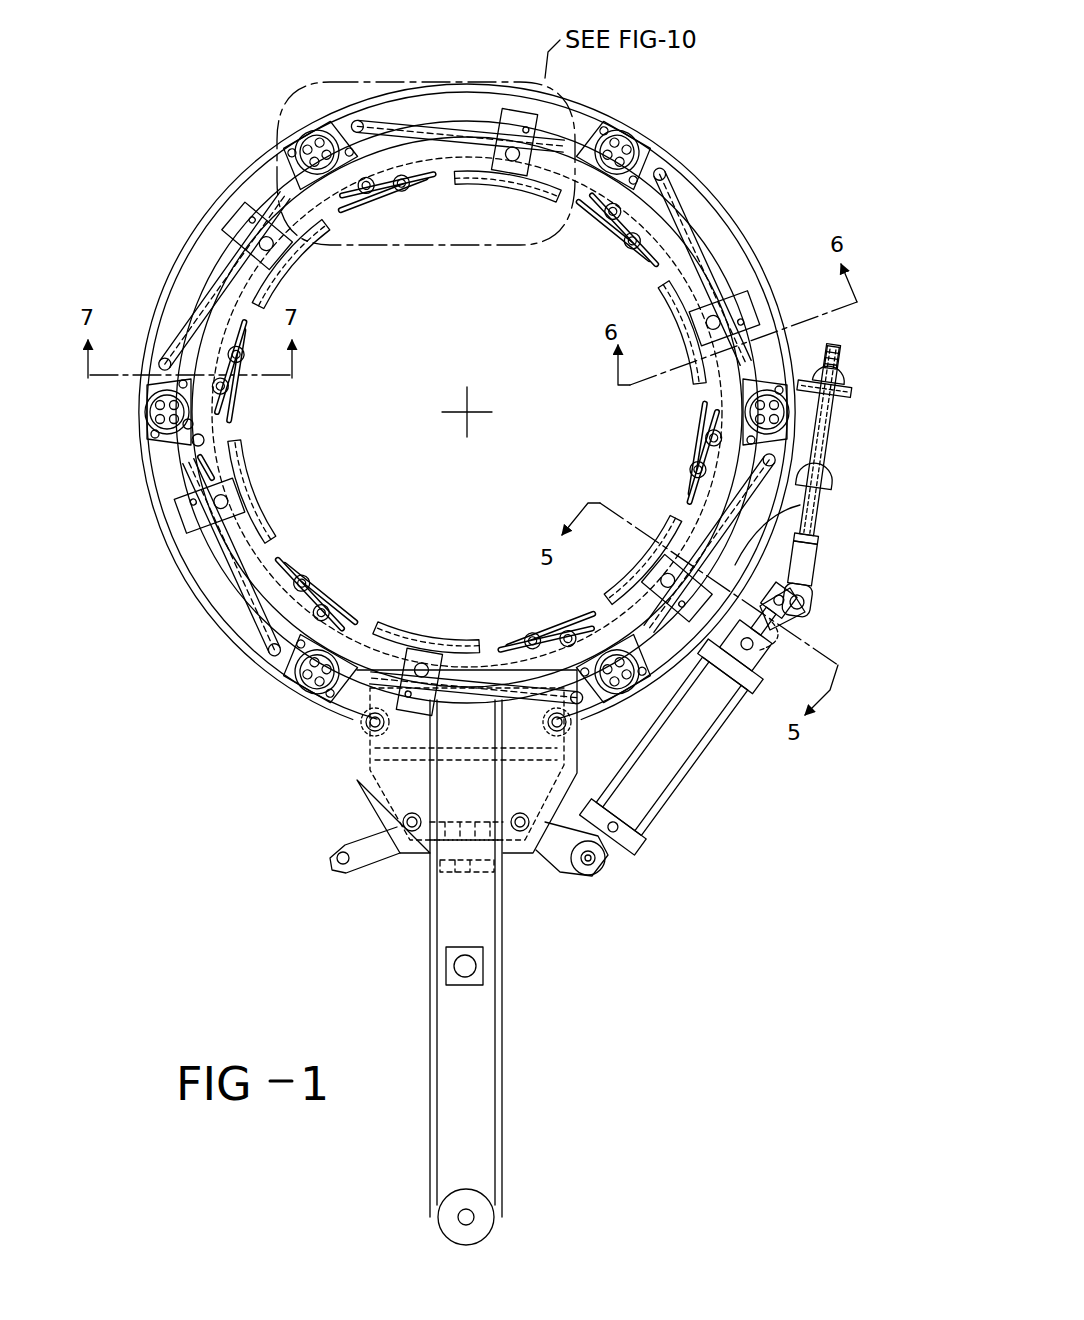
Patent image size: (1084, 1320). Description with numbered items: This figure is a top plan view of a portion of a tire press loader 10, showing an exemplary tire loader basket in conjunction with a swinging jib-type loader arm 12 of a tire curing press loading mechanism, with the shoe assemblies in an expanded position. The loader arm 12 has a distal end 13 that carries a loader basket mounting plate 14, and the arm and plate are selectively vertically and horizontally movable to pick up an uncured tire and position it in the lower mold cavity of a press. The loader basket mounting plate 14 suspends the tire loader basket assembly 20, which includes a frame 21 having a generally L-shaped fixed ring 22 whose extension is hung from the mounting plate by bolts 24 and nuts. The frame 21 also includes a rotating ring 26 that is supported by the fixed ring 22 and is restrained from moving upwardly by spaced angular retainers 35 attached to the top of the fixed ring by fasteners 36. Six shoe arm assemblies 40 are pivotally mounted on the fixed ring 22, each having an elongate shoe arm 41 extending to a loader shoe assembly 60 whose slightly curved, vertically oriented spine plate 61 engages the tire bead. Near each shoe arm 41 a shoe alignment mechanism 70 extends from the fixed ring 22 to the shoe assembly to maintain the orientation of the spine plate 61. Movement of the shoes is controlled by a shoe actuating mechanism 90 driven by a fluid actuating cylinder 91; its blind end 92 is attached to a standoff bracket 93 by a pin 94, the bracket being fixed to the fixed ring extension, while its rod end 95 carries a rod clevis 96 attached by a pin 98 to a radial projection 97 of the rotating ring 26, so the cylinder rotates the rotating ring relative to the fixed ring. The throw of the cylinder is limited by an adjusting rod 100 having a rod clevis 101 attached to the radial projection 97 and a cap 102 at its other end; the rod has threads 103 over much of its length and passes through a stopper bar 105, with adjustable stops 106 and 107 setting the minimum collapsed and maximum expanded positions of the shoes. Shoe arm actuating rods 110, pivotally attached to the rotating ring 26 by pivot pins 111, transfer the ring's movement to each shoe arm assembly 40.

The tire press loader 10 is at (160, 100).
The loader arm 12 is at (510, 1076).
The distal end 13 is at (428, 770).
The loader basket mounting plate 14 is at (362, 750).
The tire loader basket assembly 20 is at (752, 210).
The frame 21 is at (722, 190).
The fixed ring 22 is at (742, 293).
The bolts 24 is at (364, 722).
The rotating ring 26 is at (550, 168).
The angular retainers 35 is at (180, 424).
The fasteners 36 is at (192, 442).
The shoe arm assemblies 40 is at (676, 505).
The shoe arm 41 is at (730, 440).
The loader shoe assemblies 60 is at (254, 457).
The spine plate 61 is at (256, 505).
The shoe alignment mechanism 70 is at (186, 306).
The shoe actuating mechanism 90 is at (840, 658).
The fluid actuating cylinder 91 is at (652, 779).
The blind end 92 is at (606, 858).
The standoff bracket 93 is at (545, 860).
The pin 94 is at (594, 866).
The rod end 95 is at (764, 656).
The rod clevis 96 is at (756, 642).
The radial projection 97 is at (742, 566).
The pin 98 is at (770, 620).
The adjusting rod 100 is at (832, 440).
The rod clevis 101 is at (806, 572).
The cap 102 is at (838, 348).
The threads 103 is at (835, 408).
The stopper bar 105 is at (853, 386).
The adjustable stop 106 is at (822, 493).
The adjustable stop 107 is at (848, 368).
The shoe arm actuating rods 110 is at (320, 610).
The pivot pin 111 is at (346, 620).